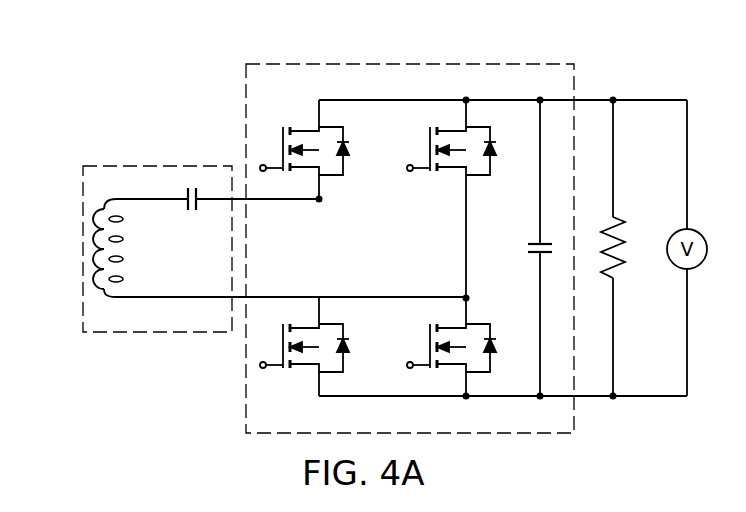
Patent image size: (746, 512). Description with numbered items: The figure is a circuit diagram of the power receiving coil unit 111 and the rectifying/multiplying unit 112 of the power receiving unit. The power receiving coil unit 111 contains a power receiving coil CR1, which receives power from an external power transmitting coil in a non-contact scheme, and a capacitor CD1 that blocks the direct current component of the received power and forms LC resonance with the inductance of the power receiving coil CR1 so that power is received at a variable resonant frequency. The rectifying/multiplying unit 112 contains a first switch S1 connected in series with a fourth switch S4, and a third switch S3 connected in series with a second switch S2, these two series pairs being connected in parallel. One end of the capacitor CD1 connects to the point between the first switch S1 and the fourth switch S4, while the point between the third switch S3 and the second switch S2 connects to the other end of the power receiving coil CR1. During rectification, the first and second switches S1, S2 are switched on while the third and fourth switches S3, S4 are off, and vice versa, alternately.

The power receiving coil unit 111 is at (105, 250).
The rectifying/multiplying unit 112 is at (468, 64).
The first switch S1 is at (321, 149).
The second switch S2 is at (468, 347).
The third switch S3 is at (468, 199).
The fourth switch S4 is at (321, 346).
The capacitor CD1 is at (217, 210).
The power receiving coil CR1 is at (132, 248).